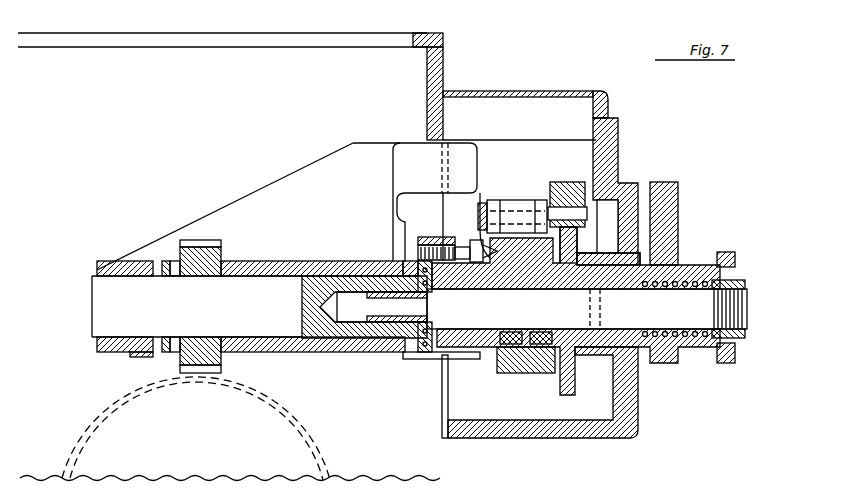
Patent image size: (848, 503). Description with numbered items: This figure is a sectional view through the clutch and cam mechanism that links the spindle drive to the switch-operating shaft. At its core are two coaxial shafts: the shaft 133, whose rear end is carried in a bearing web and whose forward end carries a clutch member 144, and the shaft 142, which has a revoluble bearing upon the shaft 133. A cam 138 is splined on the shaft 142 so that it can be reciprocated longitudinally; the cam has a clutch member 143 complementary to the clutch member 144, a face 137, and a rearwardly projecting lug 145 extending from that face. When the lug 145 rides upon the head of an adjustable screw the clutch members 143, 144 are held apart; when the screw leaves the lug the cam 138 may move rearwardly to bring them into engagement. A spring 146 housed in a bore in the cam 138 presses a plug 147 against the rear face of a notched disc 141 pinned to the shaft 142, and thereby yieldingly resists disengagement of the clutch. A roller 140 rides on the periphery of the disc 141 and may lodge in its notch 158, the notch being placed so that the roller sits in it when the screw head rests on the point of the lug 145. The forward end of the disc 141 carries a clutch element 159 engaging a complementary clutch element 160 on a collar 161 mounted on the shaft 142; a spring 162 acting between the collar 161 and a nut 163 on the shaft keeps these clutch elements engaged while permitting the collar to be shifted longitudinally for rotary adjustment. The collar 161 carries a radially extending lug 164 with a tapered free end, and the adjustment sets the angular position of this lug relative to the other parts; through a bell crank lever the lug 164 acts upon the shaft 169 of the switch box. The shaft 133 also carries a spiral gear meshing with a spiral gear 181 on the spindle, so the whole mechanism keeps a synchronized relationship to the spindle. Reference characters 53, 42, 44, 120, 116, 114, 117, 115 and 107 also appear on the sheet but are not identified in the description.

The shaft 133 is at (268, 292).
The face of the cam 137 is at (492, 258).
The rearwardly projecting lug 145 is at (495, 240).
The cam 138 is at (540, 238).
The roller 140 is at (566, 183).
The notched disc 141 is at (568, 243).
The radially extending lug 164 is at (673, 182).
The notch 158 is at (587, 228).
The clutch element 159 is at (640, 263).
The collar 161 is at (736, 260).
The spring 162 is at (725, 281).
The shaft 142 is at (738, 299).
The nut 163 is at (735, 338).
The clutch element 160 is at (640, 362).
The spring 146 is at (510, 347).
The plug 147 is at (542, 347).
The clutch member 144 is at (408, 352).
The clutch member 143 is at (427, 352).
The spiral gear 181 is at (88, 415).
The gear 53 is at (230, 490).
The shaft 169 is at (216, 371).
The part 42 is at (597, 496).
The part 44 is at (647, 496).
The part 120 is at (666, 502).
The part 116 is at (691, 493).
The part 114 is at (727, 502).
The part 117 is at (738, 502).
The part 115 is at (757, 493).
The part 107 is at (781, 502).